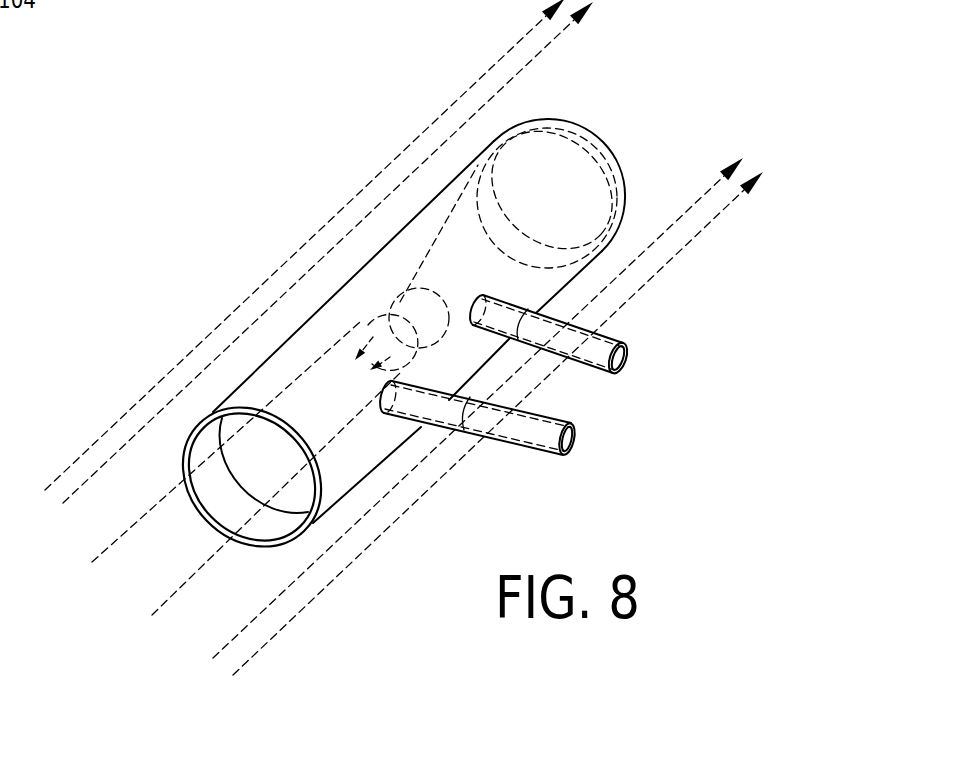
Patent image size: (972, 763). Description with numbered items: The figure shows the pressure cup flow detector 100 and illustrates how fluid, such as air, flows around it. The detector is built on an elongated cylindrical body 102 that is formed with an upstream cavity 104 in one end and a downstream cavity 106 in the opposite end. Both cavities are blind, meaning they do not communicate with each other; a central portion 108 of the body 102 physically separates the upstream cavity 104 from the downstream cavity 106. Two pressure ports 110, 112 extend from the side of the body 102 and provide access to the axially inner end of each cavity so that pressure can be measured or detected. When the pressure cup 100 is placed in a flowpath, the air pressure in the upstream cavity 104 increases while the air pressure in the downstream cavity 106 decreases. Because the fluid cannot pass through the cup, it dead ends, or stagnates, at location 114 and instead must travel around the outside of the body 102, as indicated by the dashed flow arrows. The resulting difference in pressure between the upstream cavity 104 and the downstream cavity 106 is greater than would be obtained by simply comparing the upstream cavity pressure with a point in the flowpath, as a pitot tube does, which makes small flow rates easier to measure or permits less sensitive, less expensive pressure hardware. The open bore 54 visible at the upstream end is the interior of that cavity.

The inner bore of tube 54 is at (297, 518).
The pressure cup flow detector 100 is at (392, 337).
The elongated cylindrical body 102 is at (447, 187).
The upstream cavity 104 is at (165, 465).
The downstream cavity 106 is at (637, 111).
The central portion 108 is at (357, 287).
The pressure port 110 is at (617, 340).
The pressure port 112 is at (538, 455).
The fluid stagnation location 114 is at (358, 368).